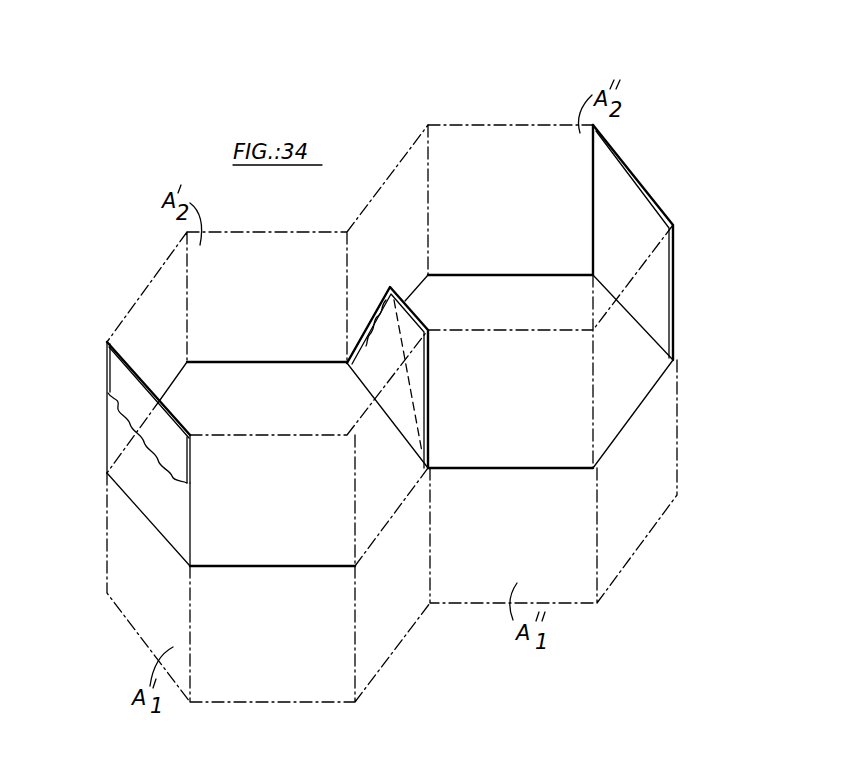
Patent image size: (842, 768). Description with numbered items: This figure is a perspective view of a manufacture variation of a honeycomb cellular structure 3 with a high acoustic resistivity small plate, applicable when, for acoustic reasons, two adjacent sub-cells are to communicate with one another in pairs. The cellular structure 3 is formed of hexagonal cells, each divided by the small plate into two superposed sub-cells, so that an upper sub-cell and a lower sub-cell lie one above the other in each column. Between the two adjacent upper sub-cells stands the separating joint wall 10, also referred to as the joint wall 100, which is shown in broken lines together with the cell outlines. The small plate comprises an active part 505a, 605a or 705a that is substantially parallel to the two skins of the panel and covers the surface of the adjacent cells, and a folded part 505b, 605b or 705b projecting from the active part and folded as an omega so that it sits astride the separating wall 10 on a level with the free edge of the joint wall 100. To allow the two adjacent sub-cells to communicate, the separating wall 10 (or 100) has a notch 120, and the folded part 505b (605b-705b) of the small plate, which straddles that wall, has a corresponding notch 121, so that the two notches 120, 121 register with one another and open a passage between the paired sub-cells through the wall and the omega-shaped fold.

The cellular structure 3 is at (105, 443).
The joint wall 100 is at (390, 345).
The joint wall 10 is at (408, 403).
The notch 120 is at (368, 328).
The notch 121 is at (383, 297).
The active part 705a is at (550, 242).
The active part 505a is at (633, 242).
The active part 605a is at (633, 242).
The folded part 705b is at (308, 377).
The folded part 505b is at (387, 377).
The folded part 605b is at (372, 352).